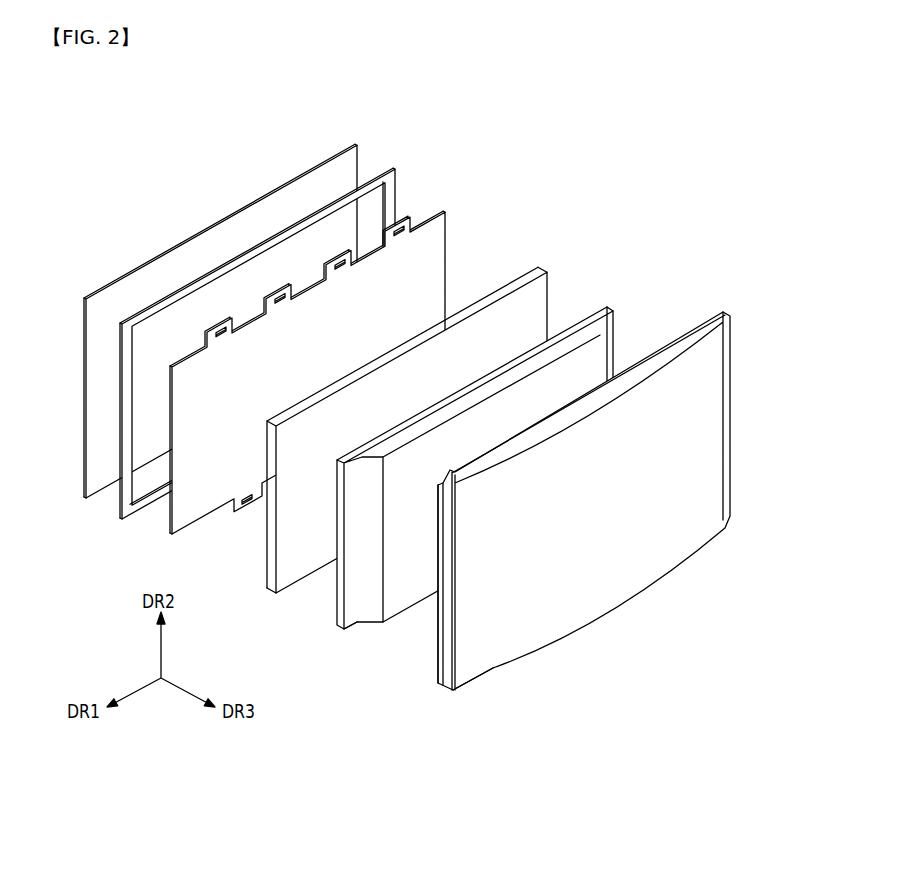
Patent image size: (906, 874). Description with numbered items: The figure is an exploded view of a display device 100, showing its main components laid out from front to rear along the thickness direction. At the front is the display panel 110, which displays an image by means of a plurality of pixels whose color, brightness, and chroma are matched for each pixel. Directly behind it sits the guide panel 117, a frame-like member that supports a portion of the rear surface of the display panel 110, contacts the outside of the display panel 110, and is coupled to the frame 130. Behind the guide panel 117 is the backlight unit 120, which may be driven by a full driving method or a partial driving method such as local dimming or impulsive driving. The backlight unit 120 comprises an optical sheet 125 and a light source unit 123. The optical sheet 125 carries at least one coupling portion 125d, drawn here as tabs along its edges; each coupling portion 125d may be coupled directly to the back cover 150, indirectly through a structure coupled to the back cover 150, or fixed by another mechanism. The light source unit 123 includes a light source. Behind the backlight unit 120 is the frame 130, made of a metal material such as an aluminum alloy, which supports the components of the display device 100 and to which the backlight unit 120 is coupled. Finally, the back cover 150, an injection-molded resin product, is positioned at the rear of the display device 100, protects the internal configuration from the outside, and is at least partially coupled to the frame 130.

The display device 100 is at (184, 142).
The display panel 110 is at (355, 143).
The guide panel 117 is at (392, 165).
The backlight unit 120 is at (384, 368).
The light source unit 123 is at (431, 403).
The optical sheet 125 is at (333, 344).
The coupling portion 125d is at (405, 217).
The frame 130 is at (608, 306).
The back cover 150 is at (724, 312).